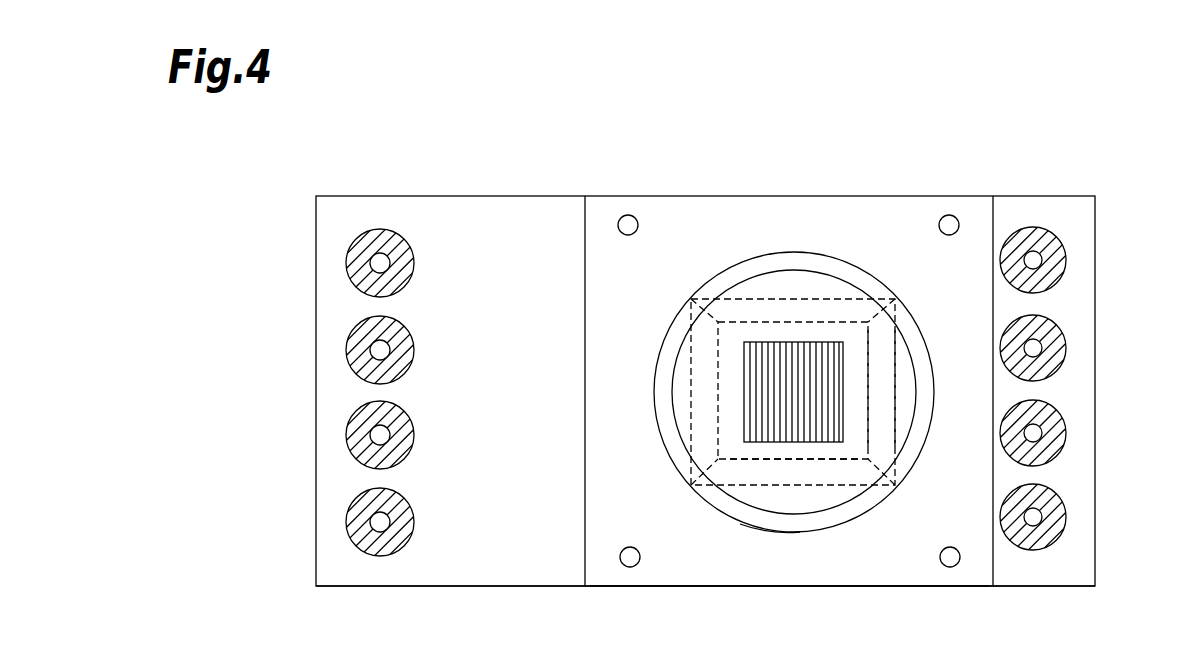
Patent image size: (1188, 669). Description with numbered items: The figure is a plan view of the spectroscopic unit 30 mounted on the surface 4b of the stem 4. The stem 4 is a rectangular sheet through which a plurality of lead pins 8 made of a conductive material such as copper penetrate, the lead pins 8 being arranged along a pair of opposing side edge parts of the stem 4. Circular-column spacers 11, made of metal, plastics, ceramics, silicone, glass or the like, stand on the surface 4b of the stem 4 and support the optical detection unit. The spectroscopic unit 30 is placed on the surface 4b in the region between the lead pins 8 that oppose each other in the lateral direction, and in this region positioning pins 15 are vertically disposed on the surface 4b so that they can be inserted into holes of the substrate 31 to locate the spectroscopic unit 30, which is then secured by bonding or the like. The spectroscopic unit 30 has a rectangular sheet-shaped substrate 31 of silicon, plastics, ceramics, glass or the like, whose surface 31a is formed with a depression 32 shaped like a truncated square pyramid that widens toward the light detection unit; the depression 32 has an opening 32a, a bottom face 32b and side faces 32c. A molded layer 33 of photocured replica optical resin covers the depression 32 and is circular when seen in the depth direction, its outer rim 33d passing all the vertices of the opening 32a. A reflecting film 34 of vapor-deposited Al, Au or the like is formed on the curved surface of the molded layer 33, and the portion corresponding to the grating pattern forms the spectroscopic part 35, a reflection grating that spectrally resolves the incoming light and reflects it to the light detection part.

The stem 4 is at (1032, 195).
The surface of the stem 4b is at (474, 215).
The lead pin 8 is at (391, 262).
The spacer 11 is at (346, 272).
The positioning pin 15 is at (626, 236).
The spectroscopic unit 30 is at (806, 192).
The substrate 31 is at (607, 588).
The surface of the substrate 31a is at (663, 578).
The depression 32 is at (758, 292).
The opening of the depression 32a is at (890, 422).
The bottom face of the depression 32b is at (845, 450).
The side face of the depression 32c is at (886, 388).
The molded layer 33 is at (714, 266).
The outer rim of the molded layer 33d is at (767, 533).
The reflecting film 34 is at (808, 290).
The spectroscopic part 35 is at (783, 341).